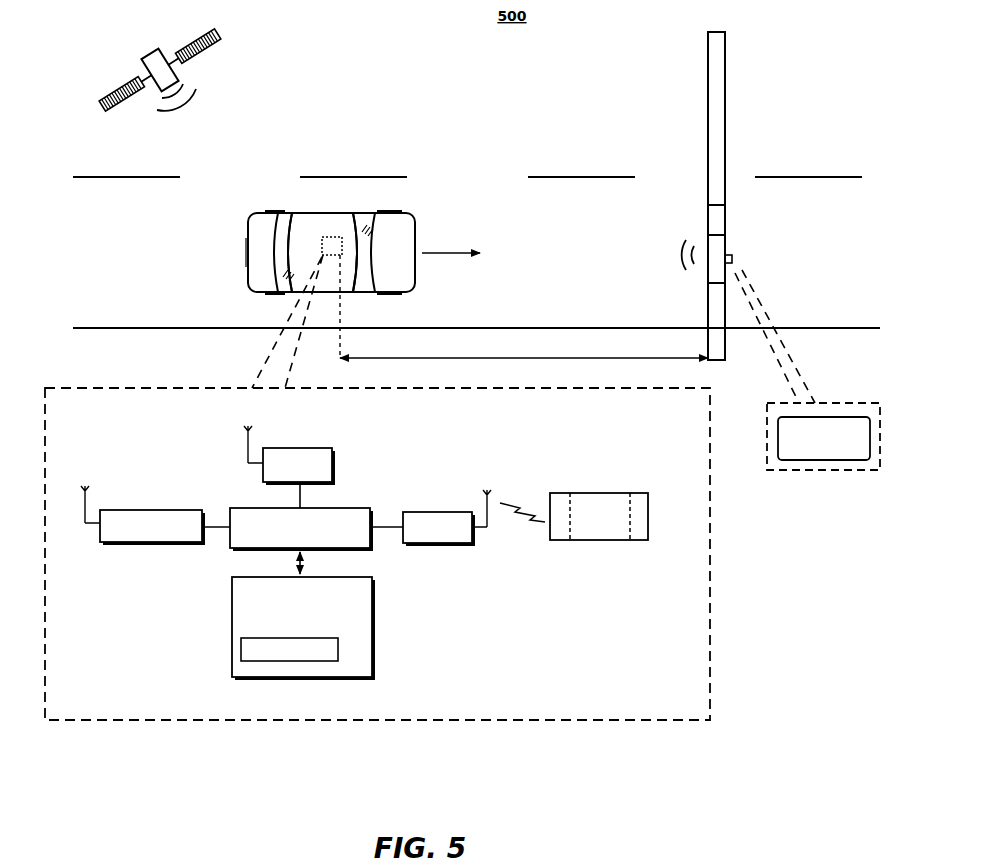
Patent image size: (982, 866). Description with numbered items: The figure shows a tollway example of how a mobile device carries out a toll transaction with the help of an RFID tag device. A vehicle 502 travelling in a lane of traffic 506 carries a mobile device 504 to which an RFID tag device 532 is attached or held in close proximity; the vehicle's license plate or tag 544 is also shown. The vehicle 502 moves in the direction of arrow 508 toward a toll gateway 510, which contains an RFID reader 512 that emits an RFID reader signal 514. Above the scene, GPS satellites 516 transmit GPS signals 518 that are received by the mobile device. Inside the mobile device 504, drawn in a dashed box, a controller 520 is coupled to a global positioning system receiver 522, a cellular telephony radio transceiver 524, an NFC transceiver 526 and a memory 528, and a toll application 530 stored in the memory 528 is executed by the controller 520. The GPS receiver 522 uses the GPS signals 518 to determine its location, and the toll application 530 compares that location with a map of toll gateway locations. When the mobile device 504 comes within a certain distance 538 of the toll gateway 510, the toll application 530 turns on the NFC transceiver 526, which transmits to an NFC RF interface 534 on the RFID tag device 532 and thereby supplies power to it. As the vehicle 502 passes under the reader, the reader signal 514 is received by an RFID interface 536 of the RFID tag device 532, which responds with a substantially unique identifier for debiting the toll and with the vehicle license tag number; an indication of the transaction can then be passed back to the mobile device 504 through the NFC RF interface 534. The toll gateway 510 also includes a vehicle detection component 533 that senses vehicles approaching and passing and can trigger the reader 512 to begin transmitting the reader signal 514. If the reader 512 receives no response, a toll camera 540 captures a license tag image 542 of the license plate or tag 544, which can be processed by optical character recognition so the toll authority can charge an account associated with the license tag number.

The vehicle 502 is at (248, 218).
The mobile device 504 is at (333, 237).
The lane of traffic 506 is at (133, 246).
The arrow 508 is at (455, 270).
The toll gateway 510 is at (725, 127).
The RFID reader 512 is at (725, 237).
The RFID reader signal 514 is at (684, 268).
The GPS satellites 516 is at (146, 72).
The GPS signals 518 is at (193, 98).
The controller 520 is at (253, 508).
The global positioning system (GPS) receiver 522 is at (332, 468).
The cellular telephony radio transceiver 524 is at (142, 510).
The NFC transceiver 526 is at (441, 512).
The memory 528 is at (322, 640).
The toll application 530 is at (278, 662).
The RFID tag device 532 is at (600, 520).
The vehicle detection component 533 is at (708, 214).
The NFC RF interface 534 is at (562, 541).
The RFID interface 536 is at (640, 541).
The distance 538 is at (456, 358).
The toll camera 540 is at (732, 256).
The license tag image 542 is at (823, 461).
The license plate or tag 544 is at (247, 259).